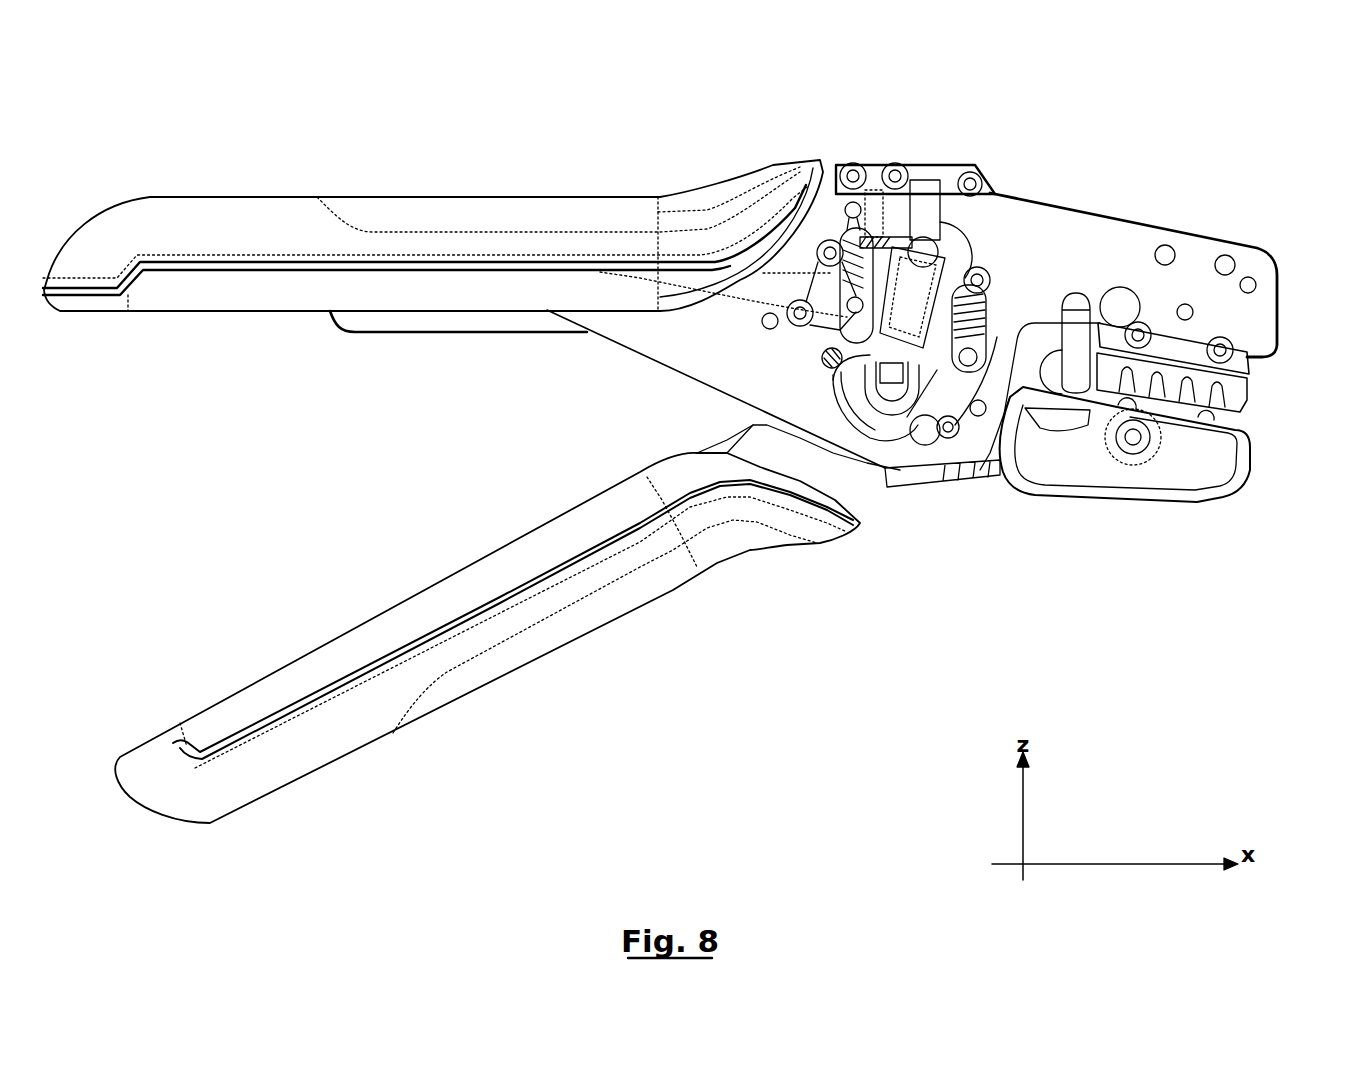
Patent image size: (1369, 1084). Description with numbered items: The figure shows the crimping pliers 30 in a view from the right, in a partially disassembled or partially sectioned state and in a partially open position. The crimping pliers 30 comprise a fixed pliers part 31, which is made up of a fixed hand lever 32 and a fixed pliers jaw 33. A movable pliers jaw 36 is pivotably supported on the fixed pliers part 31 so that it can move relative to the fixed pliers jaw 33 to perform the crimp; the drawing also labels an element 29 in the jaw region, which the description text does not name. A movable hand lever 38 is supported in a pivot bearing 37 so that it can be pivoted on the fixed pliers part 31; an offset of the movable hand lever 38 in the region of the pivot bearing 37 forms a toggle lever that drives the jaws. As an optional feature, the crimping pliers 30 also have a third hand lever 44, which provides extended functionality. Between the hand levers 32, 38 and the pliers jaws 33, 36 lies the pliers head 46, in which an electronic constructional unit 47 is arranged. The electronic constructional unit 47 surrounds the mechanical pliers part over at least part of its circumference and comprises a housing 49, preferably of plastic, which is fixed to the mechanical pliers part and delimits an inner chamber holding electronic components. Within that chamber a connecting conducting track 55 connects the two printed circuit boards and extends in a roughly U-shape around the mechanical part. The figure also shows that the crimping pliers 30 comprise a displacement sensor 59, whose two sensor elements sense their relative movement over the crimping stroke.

The crimping pliers 30 is at (650, 114).
The fixed hand lever 32 is at (268, 218).
The third hand lever 44 is at (398, 322).
The fixed pliers part 31 is at (1097, 247).
The fixed pliers jaw 33 is at (1243, 318).
The crimping die 29 is at (1240, 385).
The movable pliers jaw 36 is at (1190, 487).
The pliers head 46 is at (1003, 138).
The electronic constructional unit 47 is at (897, 150).
The housing 49 is at (933, 160).
The connecting conducting track 55 is at (925, 210).
The displacement sensor 59 is at (858, 373).
The pivot bearing 37 is at (917, 437).
The movable hand lever 38 is at (482, 678).